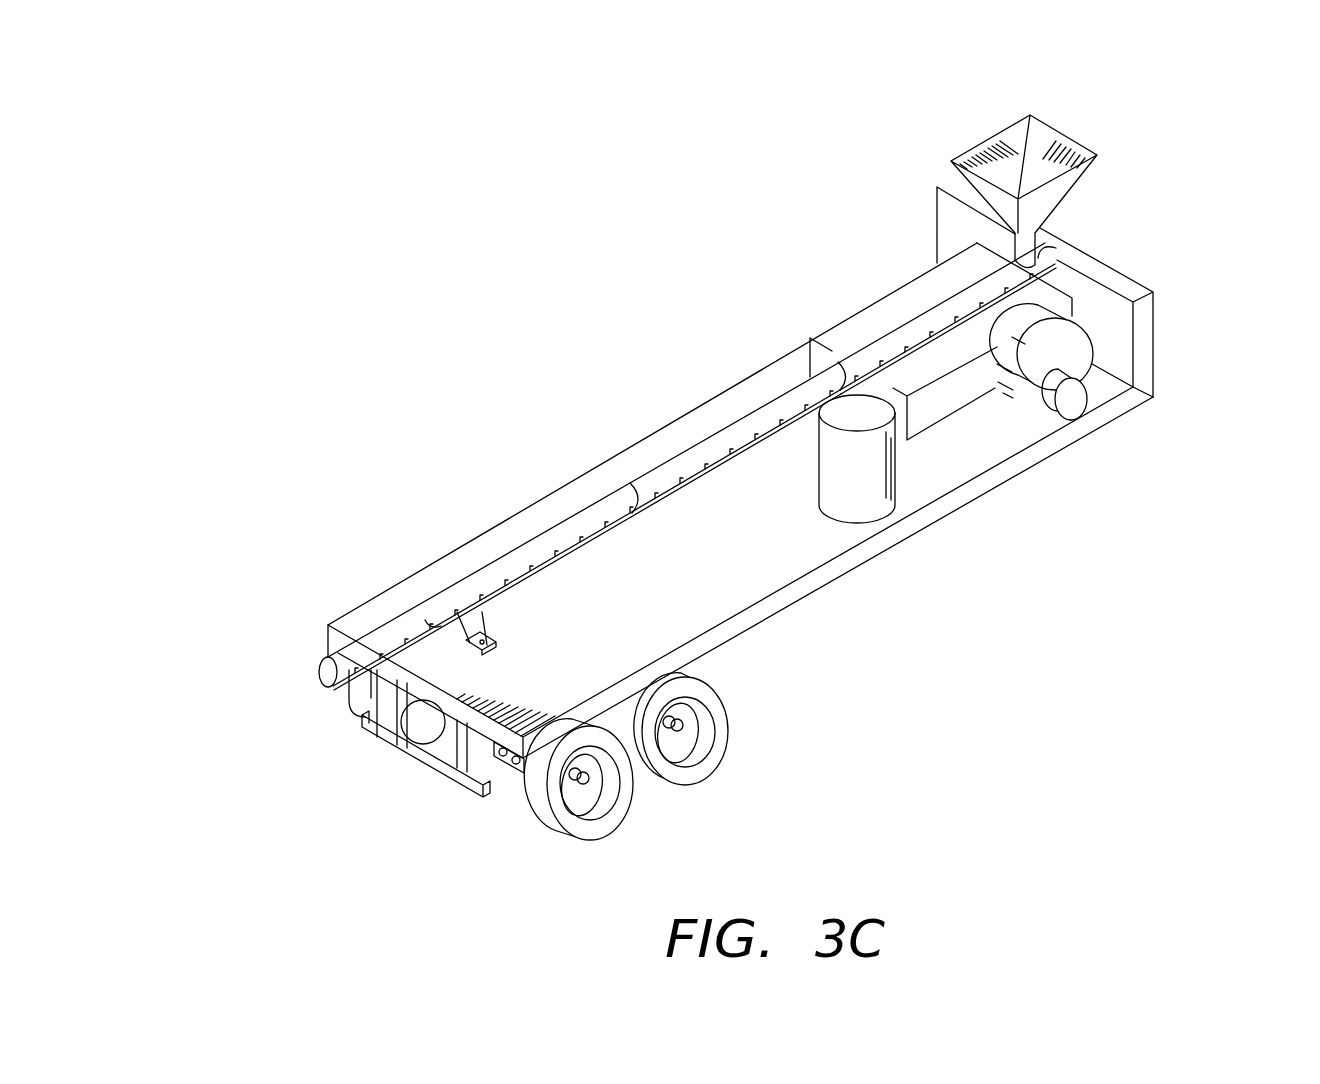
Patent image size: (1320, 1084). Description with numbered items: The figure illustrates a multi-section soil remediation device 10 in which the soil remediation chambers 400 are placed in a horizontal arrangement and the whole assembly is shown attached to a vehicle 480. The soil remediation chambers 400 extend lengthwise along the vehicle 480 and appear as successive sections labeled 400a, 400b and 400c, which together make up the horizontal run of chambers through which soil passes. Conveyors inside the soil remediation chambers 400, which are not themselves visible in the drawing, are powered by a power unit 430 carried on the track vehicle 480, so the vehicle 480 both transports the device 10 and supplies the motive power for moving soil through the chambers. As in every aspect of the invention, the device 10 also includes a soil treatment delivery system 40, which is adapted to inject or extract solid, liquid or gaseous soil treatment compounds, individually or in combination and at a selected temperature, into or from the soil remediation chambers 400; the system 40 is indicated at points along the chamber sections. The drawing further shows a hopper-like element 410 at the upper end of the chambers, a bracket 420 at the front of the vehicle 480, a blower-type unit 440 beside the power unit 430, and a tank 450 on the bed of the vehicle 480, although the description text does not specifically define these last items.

The multi-section soil remediation device 10 is at (852, 208).
The soil treatment delivery system 40 is at (777, 420).
The soil remediation chambers 400 is at (518, 537).
The first conveyor section 400a is at (394, 632).
The second conveyor section 400b is at (735, 448).
The third conveyor section 400c is at (910, 318).
The feed hopper 410 is at (1078, 140).
The trailer hitch bracket 420 is at (357, 690).
The power unit 430 is at (946, 410).
The blower 440 is at (1083, 342).
The storage tank 450 is at (862, 497).
The vehicle 480 is at (760, 611).